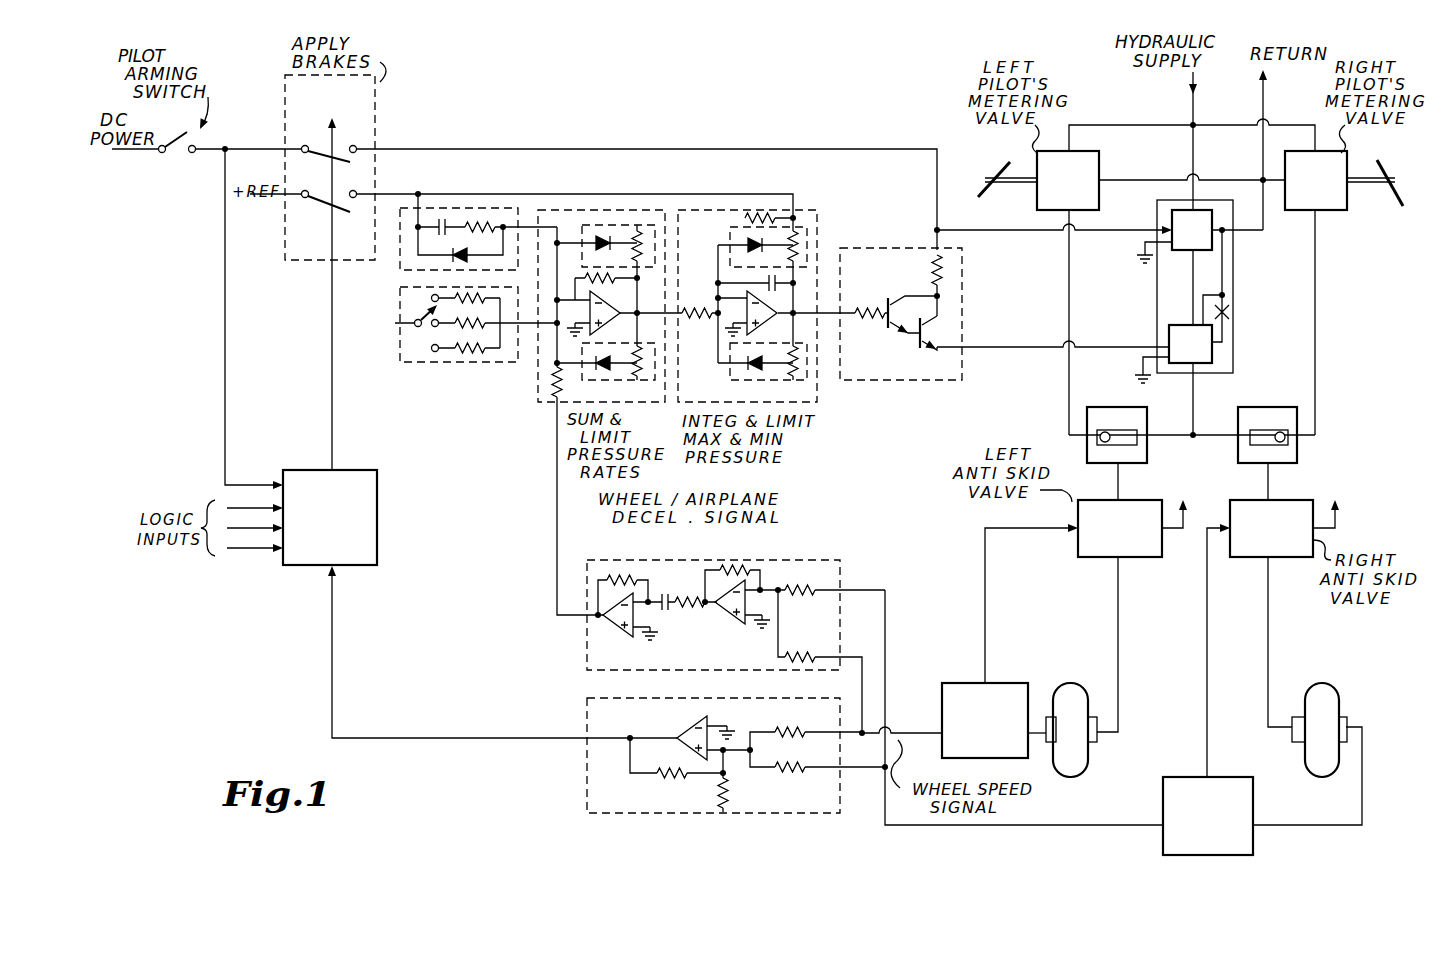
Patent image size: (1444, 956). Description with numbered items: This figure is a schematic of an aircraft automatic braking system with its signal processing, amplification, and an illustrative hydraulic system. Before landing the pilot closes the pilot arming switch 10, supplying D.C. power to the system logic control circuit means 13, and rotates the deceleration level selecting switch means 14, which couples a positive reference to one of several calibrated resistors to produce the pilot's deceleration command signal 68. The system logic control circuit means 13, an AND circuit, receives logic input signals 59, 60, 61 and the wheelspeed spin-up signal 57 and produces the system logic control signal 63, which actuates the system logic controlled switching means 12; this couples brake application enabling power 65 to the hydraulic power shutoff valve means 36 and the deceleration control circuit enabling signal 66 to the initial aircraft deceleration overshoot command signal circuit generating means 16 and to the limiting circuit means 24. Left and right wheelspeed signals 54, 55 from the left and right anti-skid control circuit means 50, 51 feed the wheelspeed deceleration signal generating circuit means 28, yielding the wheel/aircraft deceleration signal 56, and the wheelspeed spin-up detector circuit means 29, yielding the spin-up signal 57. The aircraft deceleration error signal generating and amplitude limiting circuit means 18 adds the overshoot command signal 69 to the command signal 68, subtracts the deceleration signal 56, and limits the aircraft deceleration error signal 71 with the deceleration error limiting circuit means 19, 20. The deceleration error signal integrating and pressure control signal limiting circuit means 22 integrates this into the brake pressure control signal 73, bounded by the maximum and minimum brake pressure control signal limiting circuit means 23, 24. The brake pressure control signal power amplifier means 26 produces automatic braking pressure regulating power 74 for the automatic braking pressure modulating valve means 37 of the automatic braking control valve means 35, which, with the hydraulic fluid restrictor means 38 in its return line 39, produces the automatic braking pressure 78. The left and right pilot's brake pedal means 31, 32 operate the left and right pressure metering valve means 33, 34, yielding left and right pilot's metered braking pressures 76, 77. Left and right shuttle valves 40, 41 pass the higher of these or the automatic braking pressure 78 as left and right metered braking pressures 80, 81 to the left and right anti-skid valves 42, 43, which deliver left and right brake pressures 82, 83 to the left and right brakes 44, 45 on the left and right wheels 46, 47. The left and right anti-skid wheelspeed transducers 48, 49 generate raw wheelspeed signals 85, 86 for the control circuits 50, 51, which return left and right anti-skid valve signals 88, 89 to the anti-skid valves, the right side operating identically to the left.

The pilot arming switch 10 is at (182, 139).
The system logic controlled switching means 12 is at (375, 110).
The system logic control circuit means 13 is at (378, 505).
The deceleration level selecting switch means 14 is at (497, 365).
The initial aircraft deceleration overshoot command signal circuit generating means 16 is at (470, 208).
The aircraft deceleration error signal generating and amplitude limiting circuit mea 18 is at (601, 299).
The deceleration error limiting circuit means 19 is at (640, 224).
The deceleration error limiting circuit means 20 is at (638, 400).
The deceleration error signal integrating and pressure control signal limiting circu 22 is at (765, 299).
The maximum brake pressure control signal limiting circuit means 23 is at (808, 378).
The minimum brake pressure control signal limiting circuit means 24 is at (808, 230).
The brake pressure control signal power amplifier means 26 is at (947, 262).
The wheelspeed deceleration signal generating circuit means 28 is at (840, 562).
The wheelspeed spin-up detector circuit means 29 is at (584, 770).
The left pilot's brake pedal means 31 is at (990, 176).
The right pilot's brake pedal means 32 is at (1384, 178).
The left pilot's pedal operated pressure metering valve means 33 is at (1100, 164).
The right pilot's pedal operated pressure metering valve means 34 is at (1347, 208).
The automatic braking control valve means 35 is at (1237, 257).
The hydraulic power shutoff valve means 36 is at (1188, 256).
The automatic braking pressure modulating valve means 37 is at (1181, 325).
The hydraulic fluid restrictor means 38 is at (1233, 312).
The automatic braking pressure modulating valve return line 39 is at (1225, 342).
The left shuttle valve 40 is at (1103, 407).
The right shuttle valve 41 is at (1273, 407).
The left anti-skid valve 42 is at (1142, 503).
The right anti-skid valve 43 is at (1314, 501).
The left brake 44 is at (1100, 716).
The right wheel brake 45 is at (1285, 717).
The left wheel 46 is at (1068, 683).
The right wheel 47 is at (1324, 683).
The left anti-skid wheelspeed transducer 48 is at (1047, 715).
The right wheel speed transducer 49 is at (1348, 717).
The left anti-skid control circuit 50 is at (1005, 683).
The right anti-skid control circuit means 51 is at (1168, 777).
The left wheelspeed signal 54 is at (904, 733).
The right wheelspeed signal 55 is at (885, 622).
The wheel/aircraft deceleration signal 56 is at (557, 546).
The wheelspeed spin-up signal 57 is at (334, 604).
The logic input signal 59 is at (261, 506).
The logic input signal 60 is at (261, 526).
The logic input signal 61 is at (261, 546).
The system logic control signal 63 is at (334, 428).
The brake application enabling power 65 is at (458, 148).
The deceleration control circuit enabling signal 66 is at (418, 192).
The pilot's deceleration command signal 68 is at (523, 362).
The initial aircraft deceleration overshoot command signal 69 is at (525, 224).
The aircraft deceleration error signal 71 is at (682, 320).
The brake pressure control signal 73 is at (836, 315).
The automatic braking pressure regulating power 74 is at (1104, 346).
The left pilot's metered braking pressure 76 is at (1072, 278).
The right pilot's metered braking pressure 77 is at (1317, 384).
The automatic braking pressure 78 is at (1196, 402).
The left metered braking pressure 80 is at (1117, 489).
The right metered braking pressure 81 is at (1266, 485).
The left brake pressure 82 is at (1118, 598).
The right brake pressure 83 is at (1269, 620).
The left raw wheelspeed signal 85 is at (1034, 735).
The right wheel speed signal line 86 is at (1362, 758).
The left anti-skid valve signal 88 is at (986, 574).
The right anti-skid control line 89 is at (1206, 596).